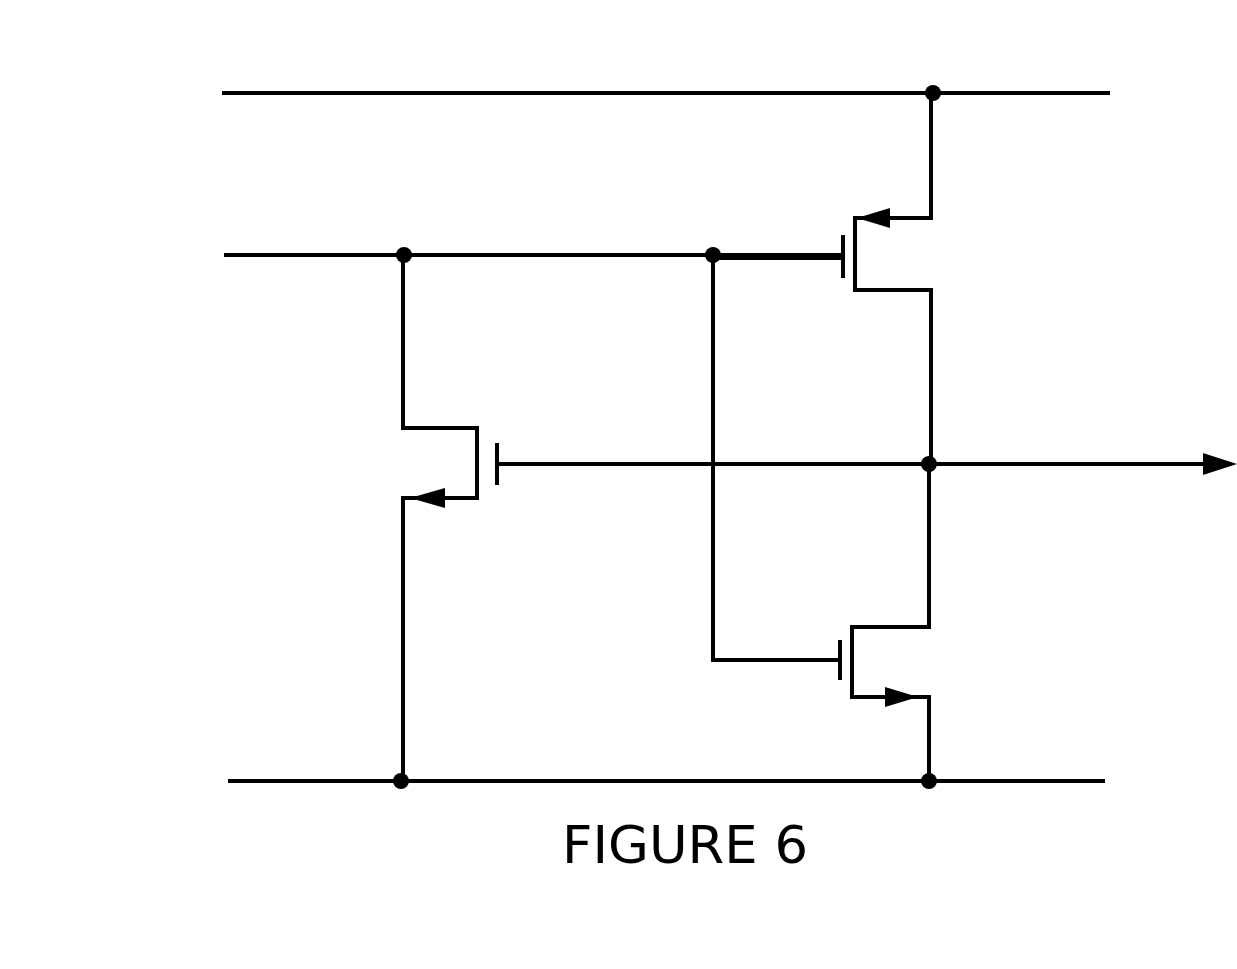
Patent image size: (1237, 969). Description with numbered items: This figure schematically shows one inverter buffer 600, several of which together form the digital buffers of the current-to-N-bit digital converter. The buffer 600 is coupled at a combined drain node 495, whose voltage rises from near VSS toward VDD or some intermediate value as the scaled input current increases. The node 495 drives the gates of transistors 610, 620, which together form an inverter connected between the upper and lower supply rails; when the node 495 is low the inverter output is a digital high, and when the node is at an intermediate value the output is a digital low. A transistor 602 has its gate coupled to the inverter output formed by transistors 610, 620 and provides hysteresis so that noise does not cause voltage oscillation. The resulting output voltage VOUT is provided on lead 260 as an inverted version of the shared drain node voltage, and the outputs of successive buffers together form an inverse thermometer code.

The inverter buffer 600 is at (1188, 48).
The combined drain node 495 is at (266, 255).
The transistor 602 is at (390, 473).
The transistor 610 is at (943, 238).
The transistor 620 is at (940, 653).
The lead 260 is at (1148, 467).